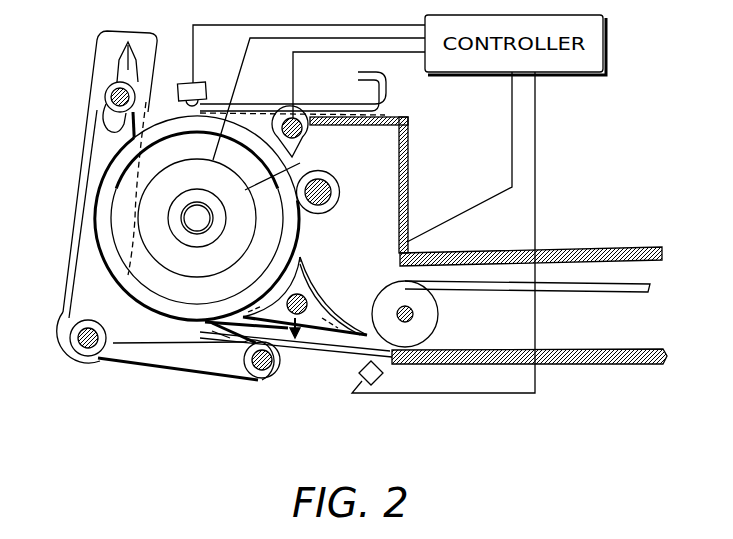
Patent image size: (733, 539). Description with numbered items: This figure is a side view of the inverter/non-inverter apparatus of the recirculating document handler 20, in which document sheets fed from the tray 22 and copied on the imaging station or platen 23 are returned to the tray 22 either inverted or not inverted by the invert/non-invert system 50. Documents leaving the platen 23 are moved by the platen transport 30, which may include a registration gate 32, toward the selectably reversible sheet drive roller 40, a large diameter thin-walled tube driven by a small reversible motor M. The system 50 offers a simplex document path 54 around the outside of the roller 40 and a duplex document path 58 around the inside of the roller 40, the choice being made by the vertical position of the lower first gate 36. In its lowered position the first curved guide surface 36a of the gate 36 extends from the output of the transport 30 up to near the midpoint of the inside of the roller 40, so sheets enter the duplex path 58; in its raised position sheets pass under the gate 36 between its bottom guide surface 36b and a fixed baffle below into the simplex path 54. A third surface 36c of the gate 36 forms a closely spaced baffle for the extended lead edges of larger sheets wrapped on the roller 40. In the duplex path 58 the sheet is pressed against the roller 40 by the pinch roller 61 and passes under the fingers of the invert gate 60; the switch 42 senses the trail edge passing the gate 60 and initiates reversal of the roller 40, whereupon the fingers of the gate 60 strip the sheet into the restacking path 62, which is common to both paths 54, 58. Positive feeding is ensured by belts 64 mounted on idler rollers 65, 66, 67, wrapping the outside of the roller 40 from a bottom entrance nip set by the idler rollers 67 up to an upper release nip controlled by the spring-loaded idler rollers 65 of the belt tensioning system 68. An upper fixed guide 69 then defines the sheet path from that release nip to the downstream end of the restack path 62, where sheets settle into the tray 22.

The recirculating document handler 20 is at (590, 198).
The document stacking and holding tray 22 is at (630, 247).
The imaging station 23 is at (613, 360).
The platen transport 30 is at (482, 344).
The registration gate 32 is at (381, 383).
The first gate 36 is at (322, 318).
The first curved guide surface 36a is at (330, 305).
The guide surface 36b is at (306, 320).
The third surface 36c is at (212, 331).
The sheet drive roller 40 is at (160, 305).
The switch 42 is at (200, 83).
The invert/non-invert system 50 is at (73, 172).
The simplex document path 54 is at (93, 222).
The duplex document path 58 is at (307, 219).
The invert gate 60 is at (268, 113).
The pinch roller 61 is at (333, 180).
The restacking path 62 is at (376, 112).
The belts 64 is at (115, 150).
The idler rollers 65 is at (107, 90).
The idler rollers 66 is at (70, 340).
The idler rollers 67 is at (248, 373).
The belt tensioning system 68 is at (85, 118).
The upper fixed guide 69 is at (318, 102).
The reversible motor M is at (280, 169).